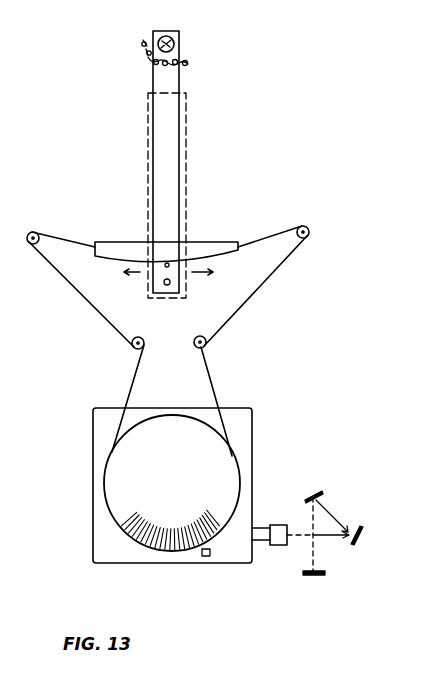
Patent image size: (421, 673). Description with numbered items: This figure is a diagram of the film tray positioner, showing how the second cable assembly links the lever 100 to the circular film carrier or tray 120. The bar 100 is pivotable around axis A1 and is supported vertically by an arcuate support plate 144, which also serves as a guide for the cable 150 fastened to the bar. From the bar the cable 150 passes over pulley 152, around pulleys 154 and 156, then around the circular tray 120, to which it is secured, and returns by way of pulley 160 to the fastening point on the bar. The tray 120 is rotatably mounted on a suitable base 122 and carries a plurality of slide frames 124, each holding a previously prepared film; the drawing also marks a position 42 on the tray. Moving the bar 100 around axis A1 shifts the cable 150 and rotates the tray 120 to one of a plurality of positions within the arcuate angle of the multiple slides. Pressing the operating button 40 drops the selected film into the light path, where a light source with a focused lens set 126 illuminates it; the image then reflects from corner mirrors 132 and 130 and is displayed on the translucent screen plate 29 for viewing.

The lever 100 is at (188, 145).
The axis A1 is at (176, 41).
The arcuate support plate 144 is at (217, 240).
The pulley 160 is at (37, 233).
The pulley 152 is at (310, 226).
The pulley 156 is at (132, 345).
The pulley 154 is at (206, 344).
The cable 150 is at (245, 296).
The base 122 is at (252, 423).
The circular film carrier or tray 120 is at (230, 473).
The drum surface 42 is at (172, 480).
The slide frames 124 is at (123, 528).
The operating button 40 is at (207, 556).
The focused lens set 126 is at (277, 547).
The corner mirror 132 is at (318, 491).
The corner mirror 130 is at (362, 537).
The translucent screen plate 29 is at (325, 575).